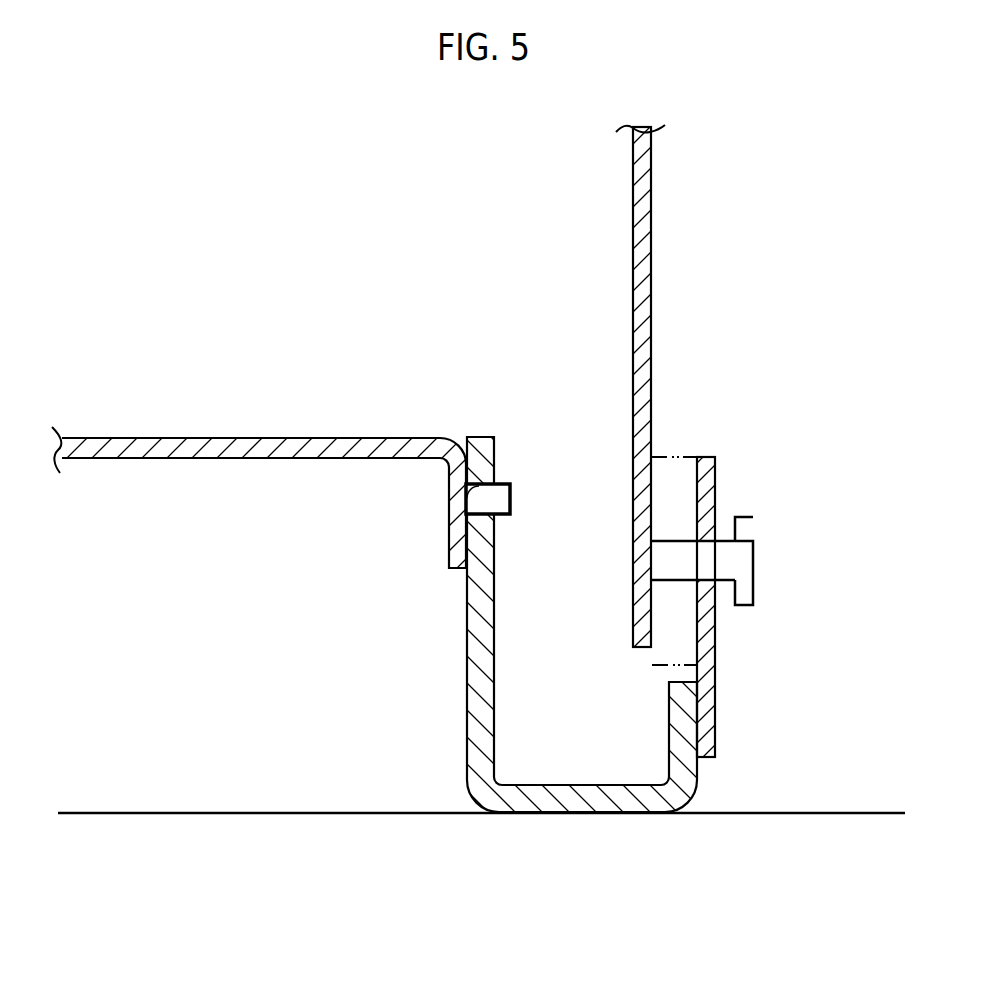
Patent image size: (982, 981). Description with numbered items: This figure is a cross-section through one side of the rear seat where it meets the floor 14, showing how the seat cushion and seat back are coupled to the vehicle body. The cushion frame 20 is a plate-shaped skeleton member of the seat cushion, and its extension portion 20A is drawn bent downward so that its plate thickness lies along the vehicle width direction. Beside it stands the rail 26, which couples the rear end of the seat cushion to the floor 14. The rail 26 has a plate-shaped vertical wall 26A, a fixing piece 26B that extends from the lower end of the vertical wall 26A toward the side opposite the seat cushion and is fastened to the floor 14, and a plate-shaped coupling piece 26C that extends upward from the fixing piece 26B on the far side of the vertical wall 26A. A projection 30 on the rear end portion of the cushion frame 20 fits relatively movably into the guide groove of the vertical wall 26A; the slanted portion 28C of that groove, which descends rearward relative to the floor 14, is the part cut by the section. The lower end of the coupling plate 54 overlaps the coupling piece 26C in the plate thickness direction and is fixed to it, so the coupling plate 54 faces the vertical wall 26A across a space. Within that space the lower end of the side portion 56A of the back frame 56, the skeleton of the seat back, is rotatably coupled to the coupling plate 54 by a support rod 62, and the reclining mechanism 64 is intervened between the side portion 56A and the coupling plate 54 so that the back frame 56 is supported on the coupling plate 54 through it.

The floor 14 is at (173, 812).
The cushion frame 20 is at (259, 474).
The extension portion 20A is at (449, 541).
The rail 26 is at (537, 624).
The vertical wall 26A is at (467, 657).
The fixing piece 26B is at (575, 784).
The coupling piece 26C is at (668, 700).
The slanted portion 28C is at (467, 498).
The projection 30 is at (512, 503).
The coupling plate 54 is at (715, 700).
The back frame 56 is at (677, 386).
The side portion 56A is at (651, 290).
The support rod 62 is at (755, 562).
The reclining mechanism 64 is at (681, 457).